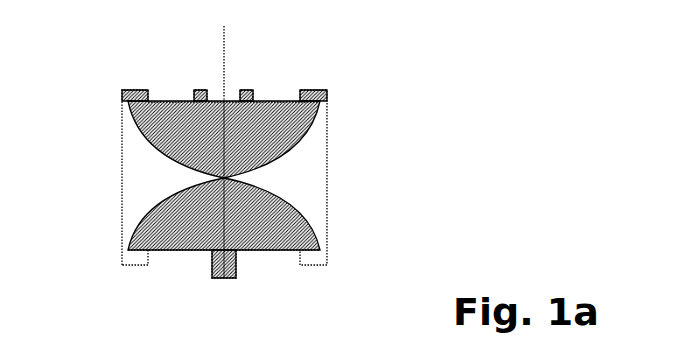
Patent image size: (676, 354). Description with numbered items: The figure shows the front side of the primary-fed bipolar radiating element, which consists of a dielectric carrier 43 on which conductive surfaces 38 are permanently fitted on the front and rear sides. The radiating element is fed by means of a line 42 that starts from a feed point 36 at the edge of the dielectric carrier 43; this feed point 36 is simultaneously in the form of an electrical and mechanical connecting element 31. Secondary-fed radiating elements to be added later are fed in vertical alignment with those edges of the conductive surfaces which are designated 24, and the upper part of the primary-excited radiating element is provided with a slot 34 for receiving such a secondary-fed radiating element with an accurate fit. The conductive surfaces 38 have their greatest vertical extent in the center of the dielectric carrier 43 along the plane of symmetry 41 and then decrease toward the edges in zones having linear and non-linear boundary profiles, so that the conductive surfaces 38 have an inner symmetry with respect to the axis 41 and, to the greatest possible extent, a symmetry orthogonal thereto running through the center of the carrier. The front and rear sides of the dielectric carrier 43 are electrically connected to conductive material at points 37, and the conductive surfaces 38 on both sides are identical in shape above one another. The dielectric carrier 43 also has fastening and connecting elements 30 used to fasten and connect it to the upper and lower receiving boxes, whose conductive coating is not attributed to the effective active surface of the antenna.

The edges of the conductive surfaces 24 is at (223, 127).
The fastening and connecting elements 30 is at (247, 96).
The electrical and mechanical connecting element 31 is at (236, 266).
The slot 34 is at (223, 148).
The feed point 36 is at (225, 280).
The points 37 is at (128, 250).
The conductive surfaces 38 is at (202, 90).
The plane of symmetry 41 is at (222, 145).
The line 42 is at (223, 178).
The dielectric carrier 43 is at (326, 171).